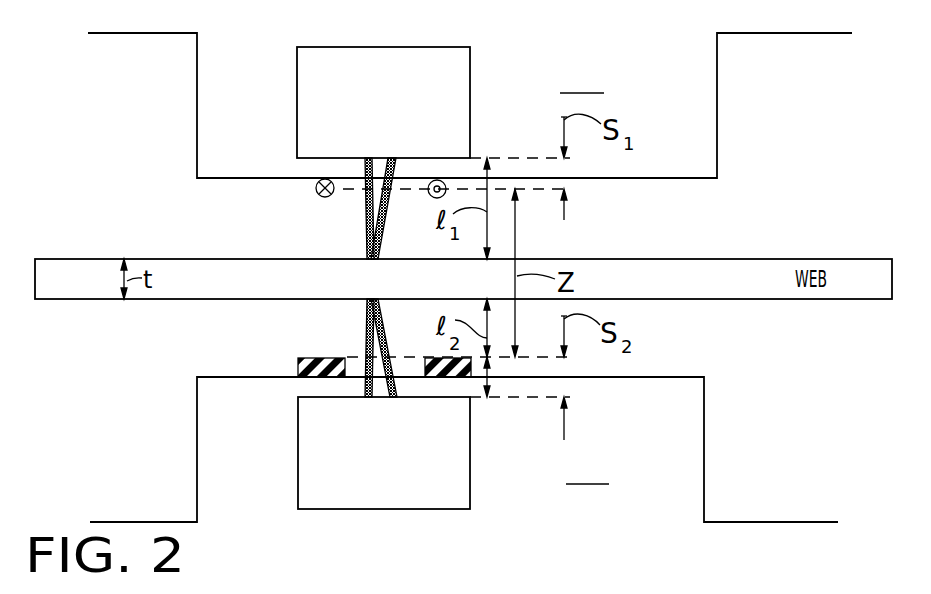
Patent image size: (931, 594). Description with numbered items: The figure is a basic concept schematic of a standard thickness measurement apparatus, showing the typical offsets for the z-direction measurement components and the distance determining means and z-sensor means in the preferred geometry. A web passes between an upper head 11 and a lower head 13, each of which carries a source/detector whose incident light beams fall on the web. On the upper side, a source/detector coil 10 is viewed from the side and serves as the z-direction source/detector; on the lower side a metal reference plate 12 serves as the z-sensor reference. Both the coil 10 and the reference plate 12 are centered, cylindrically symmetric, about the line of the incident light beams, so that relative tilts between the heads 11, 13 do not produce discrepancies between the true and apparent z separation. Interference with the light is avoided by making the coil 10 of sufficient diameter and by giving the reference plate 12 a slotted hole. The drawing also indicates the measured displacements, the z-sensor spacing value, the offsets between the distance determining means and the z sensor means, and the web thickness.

The source/detector coil 10 is at (315, 189).
The upper head 11 is at (548, 93).
The metal reference plate 12 is at (322, 358).
The lower head 13 is at (551, 484).